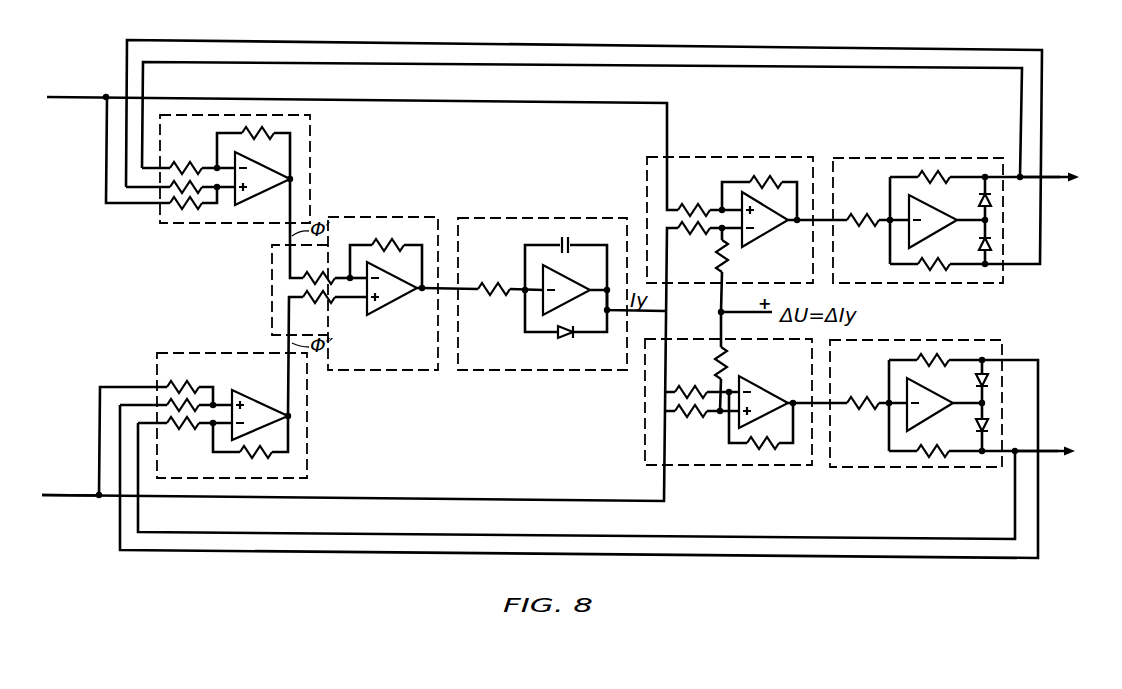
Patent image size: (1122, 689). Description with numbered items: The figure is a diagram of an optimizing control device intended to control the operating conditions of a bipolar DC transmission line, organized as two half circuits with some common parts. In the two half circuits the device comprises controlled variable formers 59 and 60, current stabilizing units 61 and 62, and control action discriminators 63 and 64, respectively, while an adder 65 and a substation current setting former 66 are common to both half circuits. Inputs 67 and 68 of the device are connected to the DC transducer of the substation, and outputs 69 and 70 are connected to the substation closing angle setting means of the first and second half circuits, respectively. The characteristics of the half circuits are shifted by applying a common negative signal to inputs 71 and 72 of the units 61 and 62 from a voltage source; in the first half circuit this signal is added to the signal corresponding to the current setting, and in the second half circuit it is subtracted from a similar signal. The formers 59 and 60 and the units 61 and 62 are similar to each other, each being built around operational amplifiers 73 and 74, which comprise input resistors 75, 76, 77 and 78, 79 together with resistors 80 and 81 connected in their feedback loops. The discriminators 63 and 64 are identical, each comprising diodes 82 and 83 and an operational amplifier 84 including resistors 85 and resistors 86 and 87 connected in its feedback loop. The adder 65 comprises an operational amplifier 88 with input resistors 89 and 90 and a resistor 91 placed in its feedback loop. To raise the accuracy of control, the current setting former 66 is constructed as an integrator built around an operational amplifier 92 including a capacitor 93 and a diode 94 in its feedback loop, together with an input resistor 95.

The controlled variable former 59 is at (312, 186).
The controlled variable former 60 is at (309, 428).
The current stabilizing unit 61 is at (760, 157).
The current stabilizing unit 62 is at (760, 468).
The control action discriminator 63 is at (948, 158).
The control action discriminator 64 is at (928, 470).
The adder 65 is at (413, 215).
The substation current setting former 66 is at (560, 217).
The input 67 is at (362, 138).
The input 68 is at (71, 495).
The output 69 is at (1048, 177).
The output 70 is at (1042, 451).
The input 71 is at (711, 275).
The input 72 is at (723, 346).
The operational amplifier 73 is at (261, 296).
The operational amplifier 74 is at (763, 310).
The input resistor 75 is at (198, 165).
The input resistor 76 is at (163, 194).
The input resistor 77 is at (175, 208).
The input resistor 78 is at (702, 207).
The input resistor 79 is at (692, 332).
The resistor 80 is at (263, 138).
The resistor 81 is at (781, 181).
The diode 82 is at (979, 199).
The diode 83 is at (979, 243).
The operational amplifier 84 is at (932, 313).
The resistor 85 is at (870, 217).
The resistor 86 is at (924, 175).
The resistor 87 is at (936, 268).
The operational amplifier 88 is at (384, 291).
The input resistor 89 is at (332, 276).
The input resistor 90 is at (312, 299).
The resistor 91 is at (398, 245).
The operational amplifier 92 is at (566, 290).
The capacitor 93 is at (569, 247).
The diode 94 is at (564, 335).
The input resistor 95 is at (500, 284).